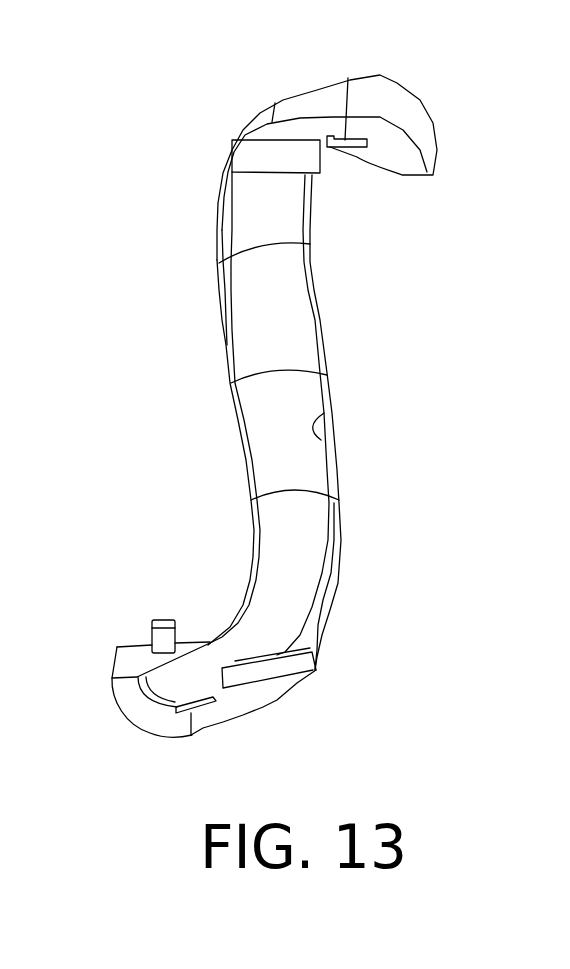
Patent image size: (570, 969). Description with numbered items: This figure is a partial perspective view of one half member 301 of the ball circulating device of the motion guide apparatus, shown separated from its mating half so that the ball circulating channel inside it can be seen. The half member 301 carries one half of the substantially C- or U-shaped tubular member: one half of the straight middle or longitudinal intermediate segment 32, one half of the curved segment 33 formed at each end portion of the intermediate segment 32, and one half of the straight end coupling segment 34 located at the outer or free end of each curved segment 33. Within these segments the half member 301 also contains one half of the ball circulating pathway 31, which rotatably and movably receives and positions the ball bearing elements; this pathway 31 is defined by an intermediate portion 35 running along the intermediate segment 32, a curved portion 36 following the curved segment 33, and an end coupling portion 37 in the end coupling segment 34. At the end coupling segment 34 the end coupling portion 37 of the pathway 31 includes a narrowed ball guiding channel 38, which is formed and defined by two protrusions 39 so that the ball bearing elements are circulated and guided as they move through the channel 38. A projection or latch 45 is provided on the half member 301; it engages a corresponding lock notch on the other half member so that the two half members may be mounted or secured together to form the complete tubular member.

The half member 301 is at (443, 194).
The end coupling segment 34 is at (407, 100).
The ball guiding channel 38 is at (337, 137).
The curved portion 36 is at (290, 188).
The intermediate portion 35 is at (268, 392).
The intermediate segment 32 is at (325, 352).
The ball circulating pathway 31 is at (318, 440).
The curved segment 33 is at (340, 562).
The end coupling portion 37 is at (175, 677).
The projection 45 is at (165, 623).
The protrusion 39 is at (234, 708).